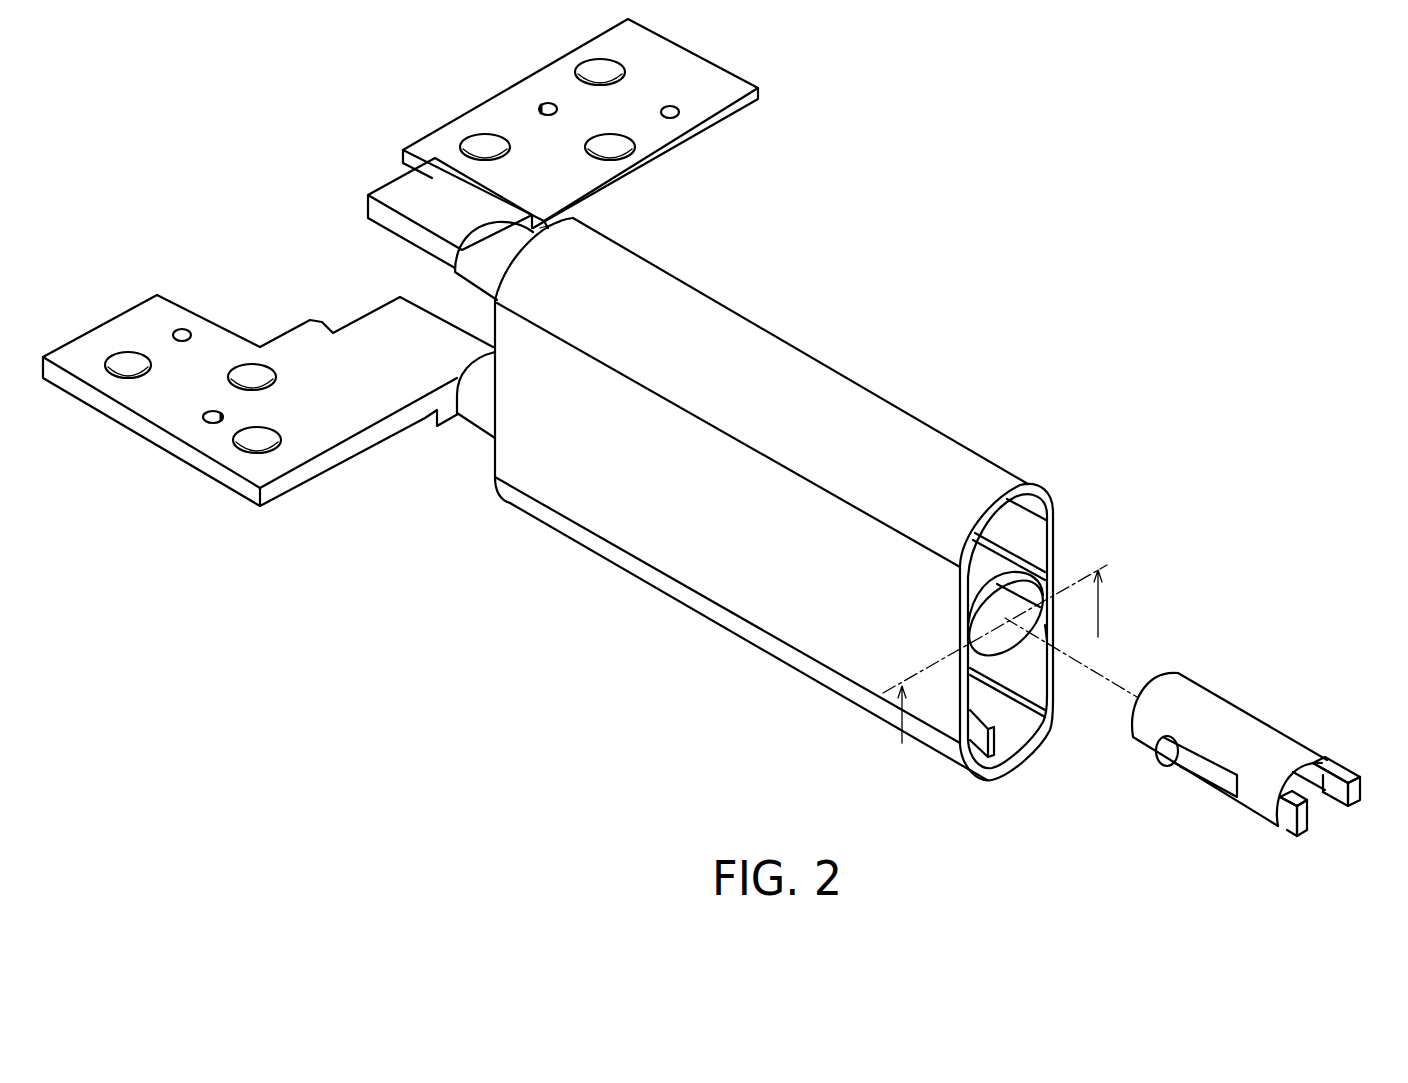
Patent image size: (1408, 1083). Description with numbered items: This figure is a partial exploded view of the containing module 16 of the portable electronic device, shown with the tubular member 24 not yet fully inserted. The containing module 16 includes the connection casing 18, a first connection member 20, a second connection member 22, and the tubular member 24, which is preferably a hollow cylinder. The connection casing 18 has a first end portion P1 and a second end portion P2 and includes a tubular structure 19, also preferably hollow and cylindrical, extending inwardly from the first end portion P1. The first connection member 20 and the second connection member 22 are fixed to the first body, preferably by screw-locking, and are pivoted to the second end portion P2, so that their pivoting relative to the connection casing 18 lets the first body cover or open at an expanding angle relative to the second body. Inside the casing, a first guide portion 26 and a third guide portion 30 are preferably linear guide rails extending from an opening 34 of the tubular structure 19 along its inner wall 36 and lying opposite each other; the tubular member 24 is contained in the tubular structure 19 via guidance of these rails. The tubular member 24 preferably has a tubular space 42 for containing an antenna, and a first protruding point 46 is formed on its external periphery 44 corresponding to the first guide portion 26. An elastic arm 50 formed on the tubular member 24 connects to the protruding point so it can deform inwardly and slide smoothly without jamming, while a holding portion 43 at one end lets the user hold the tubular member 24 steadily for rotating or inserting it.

The containing module 16 is at (1165, 185).
The connection casing 18 is at (660, 305).
The tubular structure 19 is at (1005, 573).
The first connection member 20 is at (440, 137).
The second connection member 22 is at (131, 318).
The tubular member 24 is at (1280, 717).
The first guide portion 26 is at (972, 640).
The third guide portion 30 is at (1042, 595).
The opening 34 is at (990, 663).
The inner wall 36 is at (1017, 643).
The tubular space 42 is at (1317, 797).
The holding portion 43 is at (1347, 773).
The external periphery 44 is at (1208, 697).
The first protruding point 46 is at (1163, 757).
The elastic arm 50 is at (1207, 773).
The first end portion P1 is at (1045, 498).
The second end portion P2 is at (582, 238).